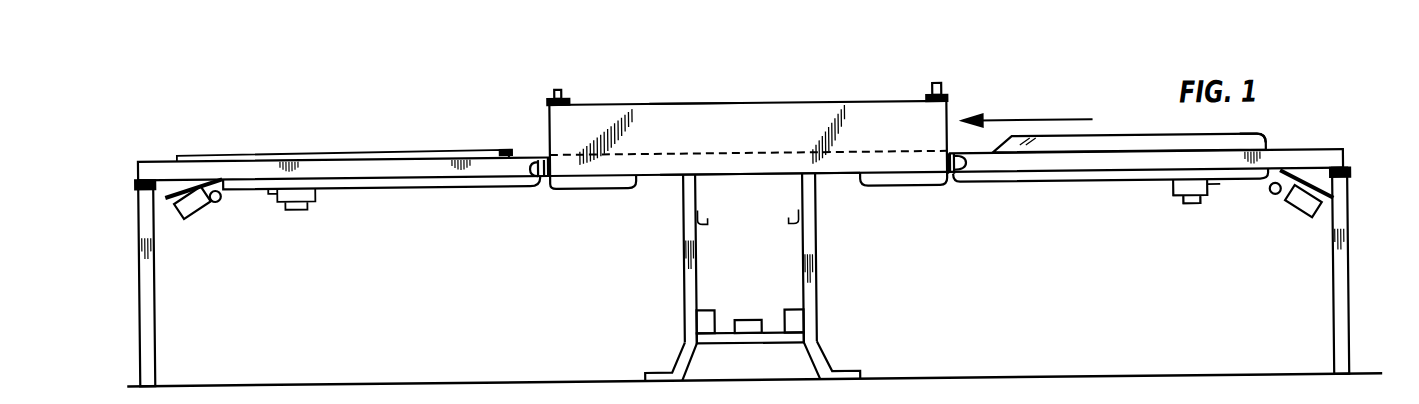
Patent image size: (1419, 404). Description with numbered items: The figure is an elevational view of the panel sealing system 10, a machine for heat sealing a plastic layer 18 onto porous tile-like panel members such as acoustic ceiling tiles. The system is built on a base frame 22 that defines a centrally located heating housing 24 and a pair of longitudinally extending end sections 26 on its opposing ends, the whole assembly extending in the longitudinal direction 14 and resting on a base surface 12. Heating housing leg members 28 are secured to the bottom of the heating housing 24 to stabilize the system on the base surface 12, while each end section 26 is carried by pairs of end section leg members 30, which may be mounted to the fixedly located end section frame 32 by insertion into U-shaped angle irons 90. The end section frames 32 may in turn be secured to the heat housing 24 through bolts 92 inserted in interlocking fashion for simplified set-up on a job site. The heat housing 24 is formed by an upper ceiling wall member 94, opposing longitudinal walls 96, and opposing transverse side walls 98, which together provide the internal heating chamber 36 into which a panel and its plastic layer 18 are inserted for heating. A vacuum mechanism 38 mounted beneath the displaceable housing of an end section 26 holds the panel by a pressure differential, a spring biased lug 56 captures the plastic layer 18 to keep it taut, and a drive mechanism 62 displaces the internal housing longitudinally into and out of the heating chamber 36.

The panel sealing system 10 is at (819, 82).
The base surface 12 is at (1088, 372).
The longitudinal direction 14 is at (1040, 123).
The plastic layer 18 is at (1262, 147).
The base frame 22 is at (847, 177).
The heating housing 24 is at (748, 106).
The longitudinally extending end section 26 is at (370, 184).
The heating housing leg member 28 is at (800, 250).
The end section leg member 30 is at (155, 264).
The fixedly located end section frame 32 is at (150, 157).
The heating chamber 36 is at (759, 121).
The vacuum mechanism 38 is at (1190, 212).
The spring biased lug 56 is at (988, 152).
The drive mechanism 62 is at (1283, 210).
The U-shaped angle iron 90 is at (134, 177).
The bolt 92 is at (525, 178).
The heat housing upper ceiling wall member 94 is at (692, 110).
The heat housing opposing longitudinal wall 96 is at (548, 124).
The heat housing opposing transverse side wall 98 is at (650, 121).